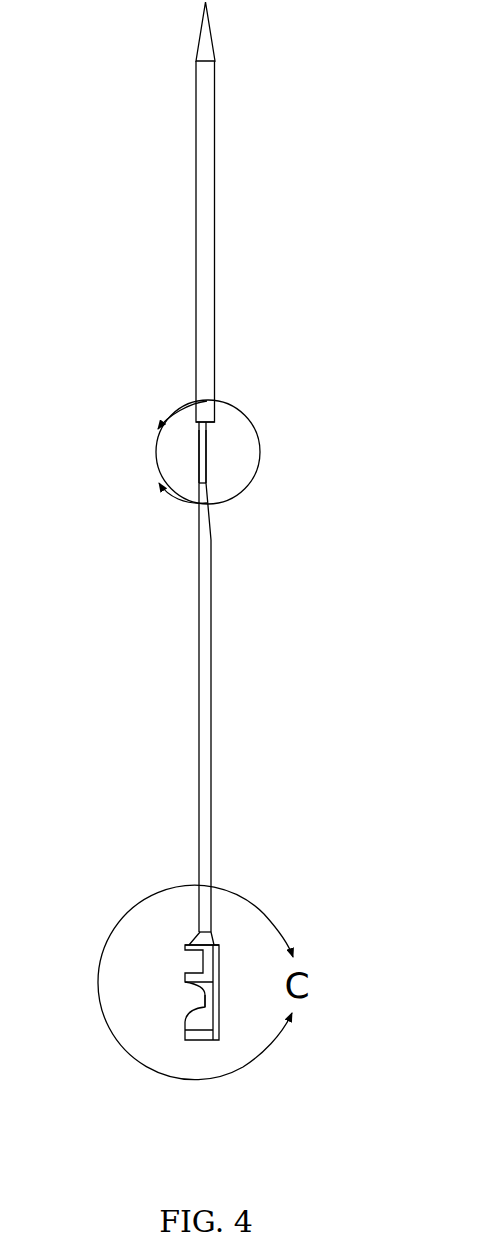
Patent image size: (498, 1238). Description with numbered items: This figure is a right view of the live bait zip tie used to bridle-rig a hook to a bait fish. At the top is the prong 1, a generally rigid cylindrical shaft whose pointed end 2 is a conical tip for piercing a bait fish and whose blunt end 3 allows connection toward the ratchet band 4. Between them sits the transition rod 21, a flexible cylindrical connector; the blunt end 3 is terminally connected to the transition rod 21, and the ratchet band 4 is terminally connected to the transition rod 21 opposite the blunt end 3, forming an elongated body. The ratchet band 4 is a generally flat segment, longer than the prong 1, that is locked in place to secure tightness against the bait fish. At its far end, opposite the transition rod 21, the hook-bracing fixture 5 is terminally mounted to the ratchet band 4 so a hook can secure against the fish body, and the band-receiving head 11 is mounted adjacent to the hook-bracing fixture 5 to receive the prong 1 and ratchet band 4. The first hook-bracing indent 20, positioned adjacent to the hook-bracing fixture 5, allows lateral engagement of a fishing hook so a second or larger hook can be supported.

The prong 1 is at (215, 175).
The pointed end 2 is at (180, 88).
The blunt end 3 is at (185, 386).
The ratchet band 4 is at (207, 650).
The transition rod 21 is at (202, 447).
The hook-bracing fixture 5 is at (178, 931).
The band-receiving head 11 is at (172, 1038).
The first hook-bracing indent 20 is at (208, 1005).